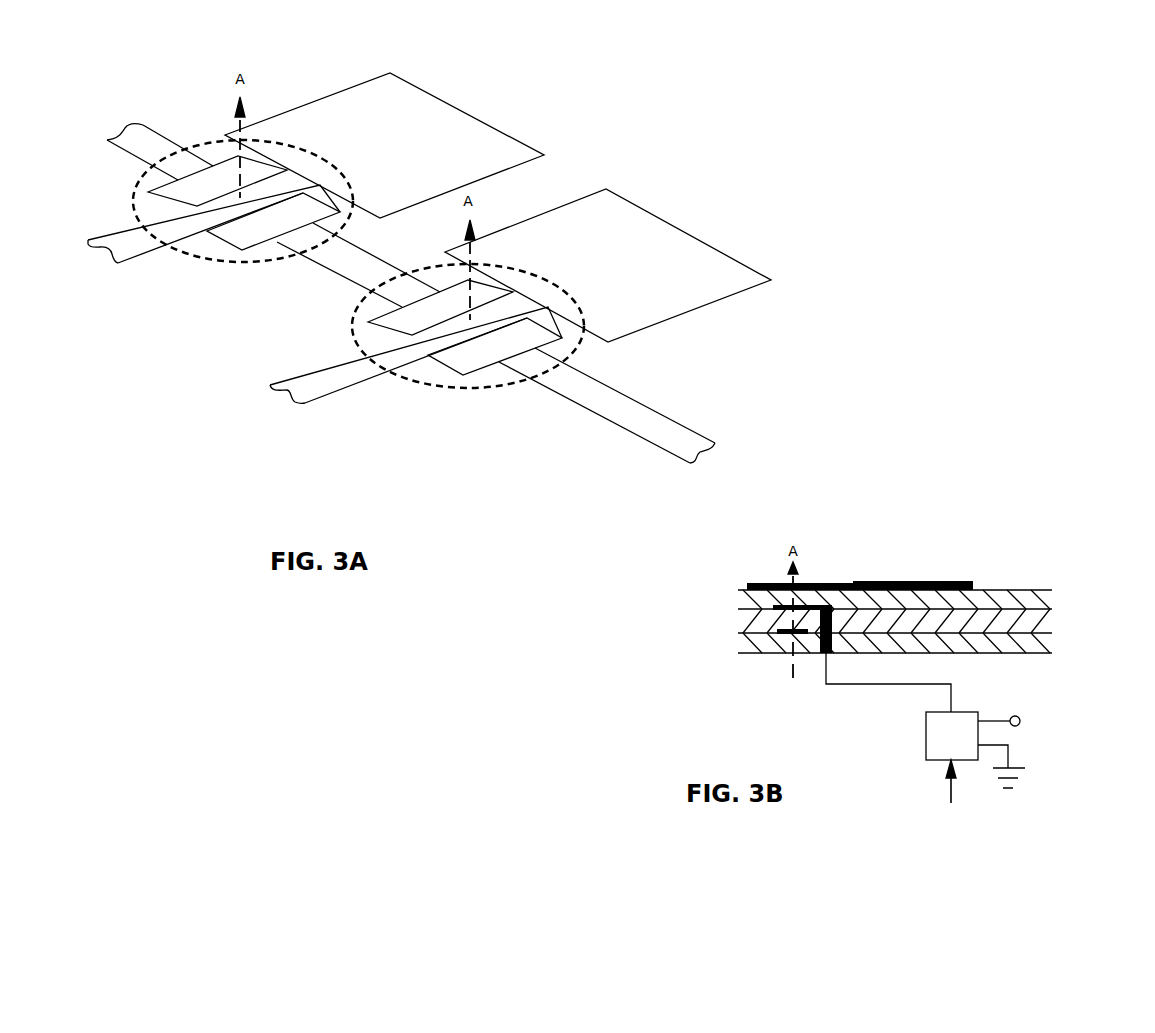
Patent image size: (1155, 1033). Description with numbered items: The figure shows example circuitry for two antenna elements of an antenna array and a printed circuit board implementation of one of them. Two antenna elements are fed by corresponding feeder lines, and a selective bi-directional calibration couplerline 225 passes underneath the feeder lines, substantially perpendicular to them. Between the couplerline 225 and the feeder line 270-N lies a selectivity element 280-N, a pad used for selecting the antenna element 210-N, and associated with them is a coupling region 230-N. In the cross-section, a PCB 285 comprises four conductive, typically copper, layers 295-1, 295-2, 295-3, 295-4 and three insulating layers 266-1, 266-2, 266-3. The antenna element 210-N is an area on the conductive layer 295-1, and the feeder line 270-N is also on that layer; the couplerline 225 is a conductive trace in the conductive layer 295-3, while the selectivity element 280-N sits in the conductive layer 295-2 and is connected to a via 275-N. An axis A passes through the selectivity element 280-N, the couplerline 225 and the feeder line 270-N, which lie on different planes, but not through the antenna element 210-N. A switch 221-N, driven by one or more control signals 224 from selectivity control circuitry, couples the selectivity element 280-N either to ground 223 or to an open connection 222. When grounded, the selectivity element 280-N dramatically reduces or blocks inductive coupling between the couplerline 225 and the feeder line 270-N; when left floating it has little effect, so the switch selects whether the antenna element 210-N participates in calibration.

In FIG. 3A, the couplerline 225 is at (156, 146).
In FIG. 3B, the couplerline 225 is at (787, 636).
In FIG. 3A, the feeder line N 270-N is at (123, 248).
In FIG. 3B, the feeder line N 270-N is at (756, 582).
In FIG. 3A, the antenna element N 210-N is at (452, 129).
In FIG. 3B, the antenna element N 210-N is at (977, 579).
In FIG. 3A, the selectivity element N 280-N is at (236, 238).
In FIG. 3B, the selectivity element N 280-N is at (772, 612).
In FIG. 3A, the coupling region N 230-N is at (259, 265).
In FIG. 3B, the PCB 285 is at (729, 593).
In FIG. 3B, the conductive layer 295-1 is at (1010, 576).
In FIG. 3B, the conductive layer 295-2 is at (724, 602).
In FIG. 3B, the conductive layer 295-3 is at (727, 632).
In FIG. 3B, the conductive layer 295-4 is at (954, 659).
In FIG. 3B, the insulating layer 266-1 is at (1054, 597).
In FIG. 3B, the insulating layer 266-2 is at (1064, 619).
In FIG. 3B, the insulating layer 266-3 is at (1055, 650).
In FIG. 3B, the via 275-N is at (828, 661).
In FIG. 3B, the switch 221-N is at (929, 745).
In FIG. 3B, the open connection 222 is at (1023, 727).
In FIG. 3B, the ground 223 is at (1022, 770).
In FIG. 3B, the control signals 224 is at (950, 781).